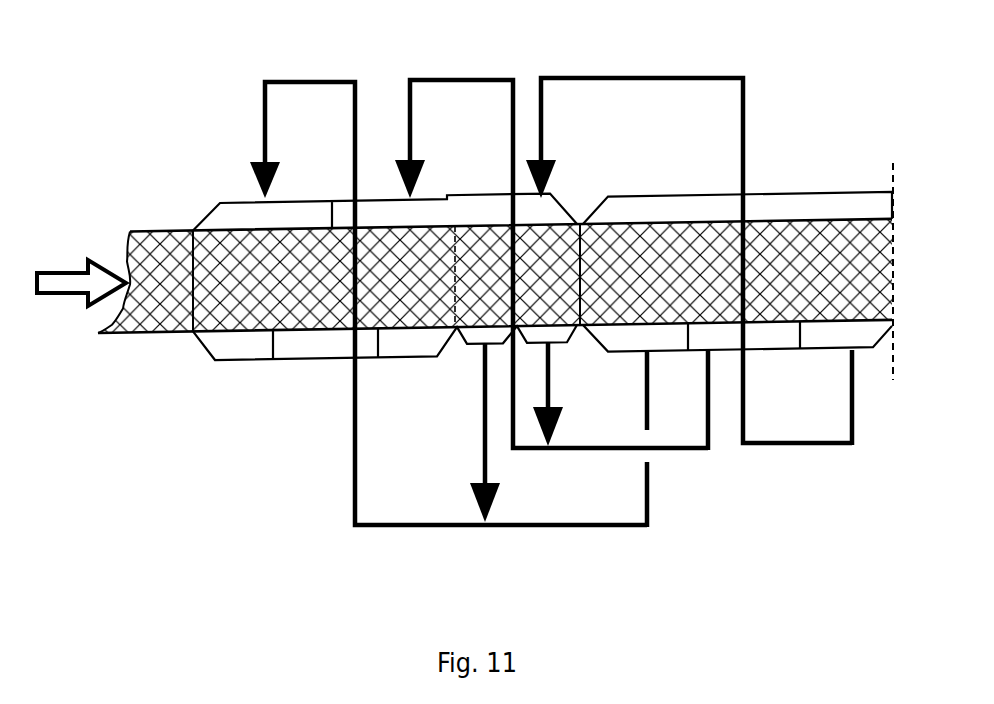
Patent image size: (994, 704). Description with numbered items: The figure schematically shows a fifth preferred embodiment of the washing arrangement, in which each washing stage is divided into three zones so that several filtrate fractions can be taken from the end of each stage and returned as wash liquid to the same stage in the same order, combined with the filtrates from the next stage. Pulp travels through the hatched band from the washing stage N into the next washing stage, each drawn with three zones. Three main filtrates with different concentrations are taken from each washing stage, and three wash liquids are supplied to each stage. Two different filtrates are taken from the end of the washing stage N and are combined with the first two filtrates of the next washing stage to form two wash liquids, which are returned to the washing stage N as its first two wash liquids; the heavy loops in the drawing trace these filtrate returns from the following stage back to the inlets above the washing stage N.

The washing stage N is at (385, 276).